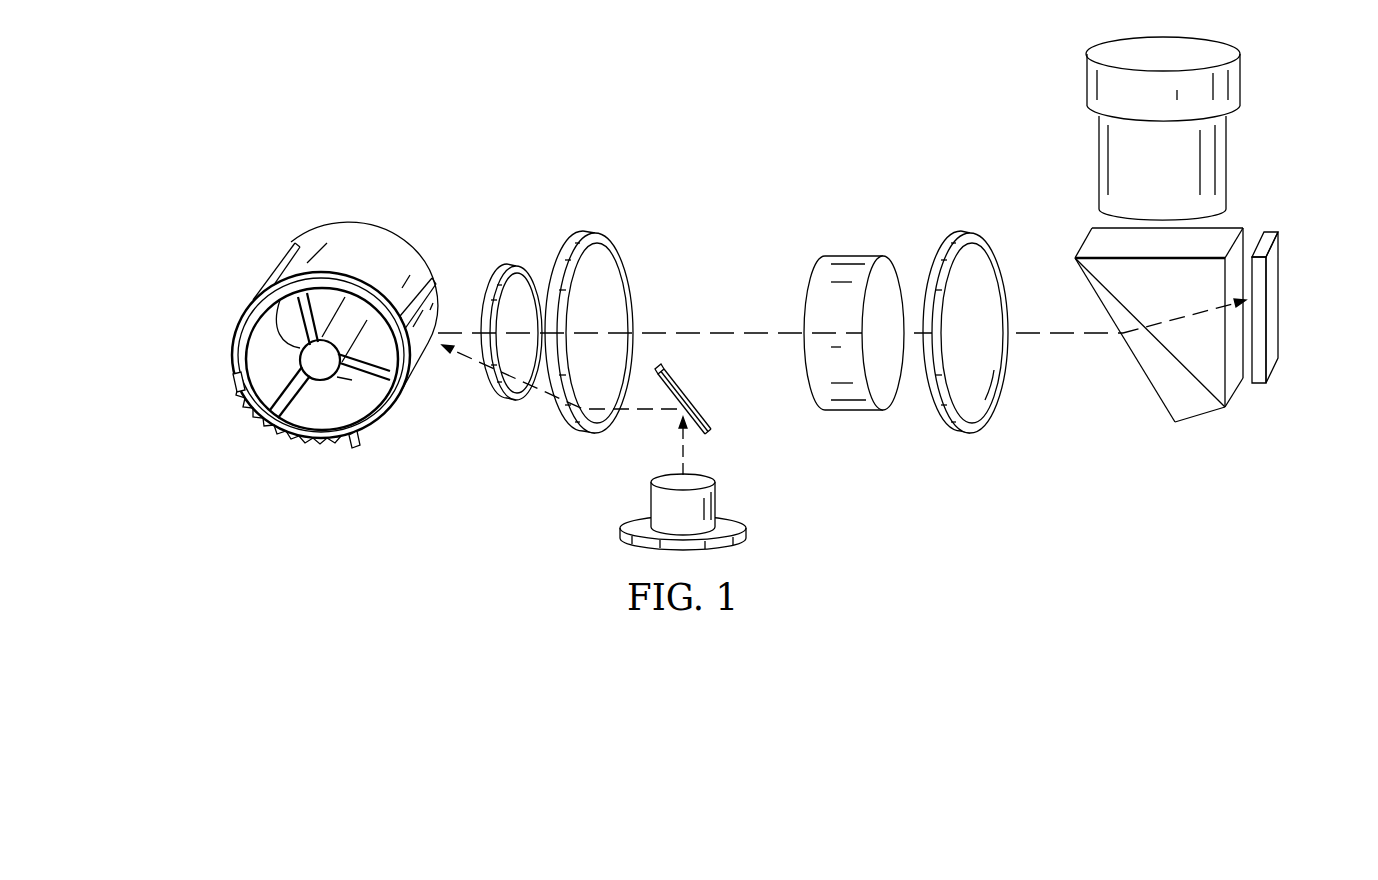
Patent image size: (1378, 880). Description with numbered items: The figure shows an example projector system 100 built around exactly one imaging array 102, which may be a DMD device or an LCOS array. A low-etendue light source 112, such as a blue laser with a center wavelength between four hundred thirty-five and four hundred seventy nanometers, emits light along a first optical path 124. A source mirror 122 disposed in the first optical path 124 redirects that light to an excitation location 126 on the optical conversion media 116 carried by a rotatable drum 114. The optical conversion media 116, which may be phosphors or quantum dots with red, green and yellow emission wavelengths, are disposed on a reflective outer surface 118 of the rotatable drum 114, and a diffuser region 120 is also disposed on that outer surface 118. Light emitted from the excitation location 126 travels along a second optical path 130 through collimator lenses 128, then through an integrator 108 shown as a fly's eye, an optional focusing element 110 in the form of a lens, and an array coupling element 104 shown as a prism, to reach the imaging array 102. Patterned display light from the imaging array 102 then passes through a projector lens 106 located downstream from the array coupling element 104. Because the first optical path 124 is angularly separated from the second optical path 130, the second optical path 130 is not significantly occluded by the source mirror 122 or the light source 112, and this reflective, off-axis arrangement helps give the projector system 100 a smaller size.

The projector system 100 is at (494, 113).
The imaging array 102 is at (1280, 288).
The array coupling element 104 is at (1201, 422).
The projector lens 106 is at (1228, 158).
The integrator 108 is at (858, 411).
The focusing element 110 is at (965, 434).
The light source 112 is at (620, 532).
The rotatable drum 114 is at (344, 418).
The optical conversion media 116 is at (370, 240).
The reflective outer surface 118 is at (228, 377).
The diffuser region 120 is at (265, 432).
The source mirror 122 is at (692, 401).
The first optical path 124 is at (538, 413).
The excitation location 126 is at (441, 368).
The collimator lenses 128 is at (510, 266).
The second optical path 130 is at (697, 323).